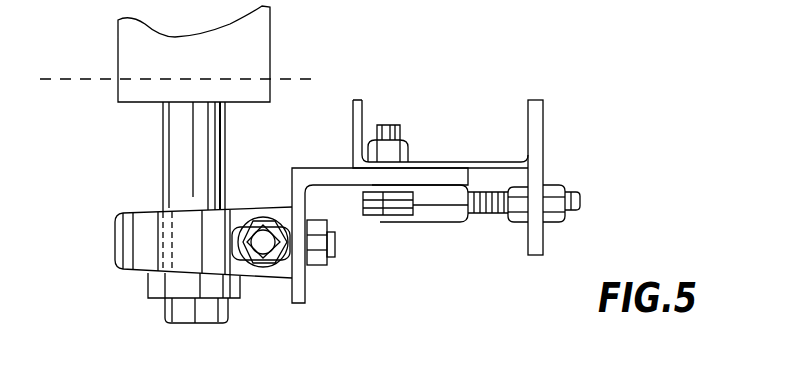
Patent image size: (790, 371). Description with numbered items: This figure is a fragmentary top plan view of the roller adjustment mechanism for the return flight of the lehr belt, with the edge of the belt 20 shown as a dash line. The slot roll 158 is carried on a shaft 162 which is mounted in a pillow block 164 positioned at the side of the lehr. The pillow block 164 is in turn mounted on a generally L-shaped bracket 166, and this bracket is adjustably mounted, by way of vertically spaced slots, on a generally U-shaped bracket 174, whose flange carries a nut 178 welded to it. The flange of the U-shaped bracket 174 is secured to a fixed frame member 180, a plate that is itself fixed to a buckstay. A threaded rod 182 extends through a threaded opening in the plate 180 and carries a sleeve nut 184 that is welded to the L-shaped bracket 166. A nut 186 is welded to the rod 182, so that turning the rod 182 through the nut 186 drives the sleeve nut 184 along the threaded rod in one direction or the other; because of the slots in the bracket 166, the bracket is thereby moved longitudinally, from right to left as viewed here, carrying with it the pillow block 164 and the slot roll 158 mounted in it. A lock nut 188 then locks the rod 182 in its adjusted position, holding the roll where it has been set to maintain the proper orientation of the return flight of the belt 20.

The belt 20 is at (72, 70).
The slot roll 158 is at (257, 44).
The shaft 162 is at (208, 166).
The pillow block 164 is at (260, 268).
The L-shaped bracket 166 is at (314, 176).
The U-shaped bracket 174 is at (452, 158).
The nut 178 is at (397, 147).
The fixed frame member 180 is at (540, 137).
The threaded rod 182 is at (493, 213).
The sleeve nut 184 is at (430, 212).
The nut 186 is at (520, 222).
The lock nut 188 is at (558, 190).